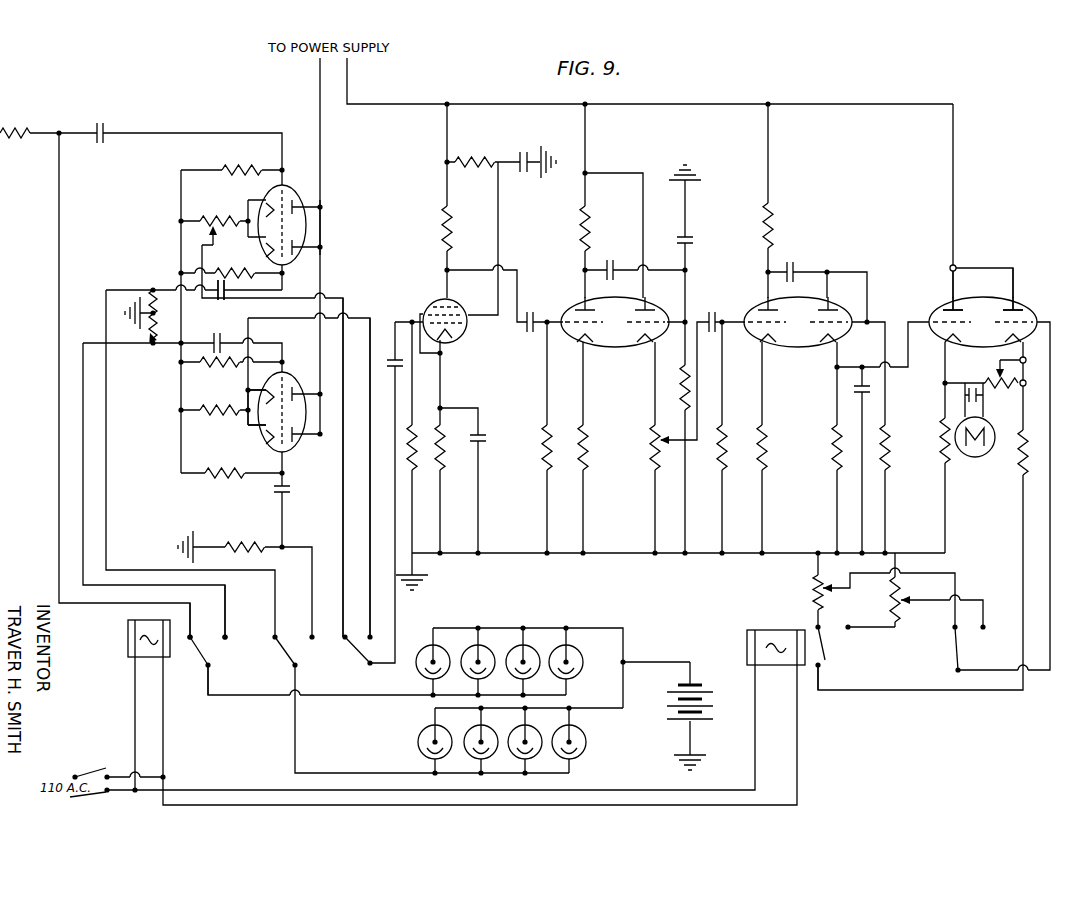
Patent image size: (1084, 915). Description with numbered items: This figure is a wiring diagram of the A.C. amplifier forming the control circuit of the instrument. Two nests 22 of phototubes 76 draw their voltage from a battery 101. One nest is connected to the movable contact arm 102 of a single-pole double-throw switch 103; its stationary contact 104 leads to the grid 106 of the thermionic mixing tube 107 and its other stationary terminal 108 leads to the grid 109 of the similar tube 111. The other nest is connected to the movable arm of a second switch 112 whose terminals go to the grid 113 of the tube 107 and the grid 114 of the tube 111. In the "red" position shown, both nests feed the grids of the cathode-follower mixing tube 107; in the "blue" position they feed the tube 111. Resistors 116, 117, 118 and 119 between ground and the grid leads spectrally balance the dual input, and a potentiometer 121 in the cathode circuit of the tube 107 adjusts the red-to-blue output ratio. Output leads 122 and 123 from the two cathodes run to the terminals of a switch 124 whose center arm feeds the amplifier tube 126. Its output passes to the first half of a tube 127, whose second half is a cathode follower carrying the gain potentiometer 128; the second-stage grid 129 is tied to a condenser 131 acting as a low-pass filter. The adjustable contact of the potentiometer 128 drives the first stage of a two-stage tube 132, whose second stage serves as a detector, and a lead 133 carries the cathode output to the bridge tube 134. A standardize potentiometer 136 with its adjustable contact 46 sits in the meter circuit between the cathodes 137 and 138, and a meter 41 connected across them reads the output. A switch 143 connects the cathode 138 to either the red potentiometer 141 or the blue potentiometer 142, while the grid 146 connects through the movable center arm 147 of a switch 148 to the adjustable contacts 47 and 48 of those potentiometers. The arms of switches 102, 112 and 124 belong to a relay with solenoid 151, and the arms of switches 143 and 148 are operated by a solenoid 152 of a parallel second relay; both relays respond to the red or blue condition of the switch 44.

The resistor 116 is at (22, 145).
The grid 106 is at (284, 193).
The thermionic mixing tube 107 is at (310, 225).
The potentiometer 121 is at (218, 236).
The resistor 117 is at (150, 296).
The resistor 118 is at (153, 347).
The grid 113 is at (287, 272).
The grid 109 is at (300, 351).
The tube 111 is at (262, 435).
The grid 114 is at (288, 452).
The resistor 119 is at (264, 542).
The output lead 122 is at (338, 298).
The output lead 123 is at (370, 320).
The stationary contact 104 is at (191, 635).
The stationary terminal 108 is at (226, 636).
The single-pole double-throw switch 112 is at (284, 646).
The single-pole double-throw switch 103 is at (193, 655).
The movable contact arm 102 is at (246, 670).
The single-pole double-throw switch 124 is at (350, 603).
The solenoid 151 is at (137, 618).
The switch 44 is at (94, 769).
The amplifier tube 126 is at (465, 341).
The tube 127 is at (574, 303).
The second stage grid 129 is at (645, 331).
The potentiometer 128 is at (652, 451).
The condenser 131 is at (689, 244).
The two-stage tube 132 is at (798, 348).
The lead 133 is at (906, 370).
The two-stage tube 134 is at (941, 306).
The cathode 137 is at (960, 333).
The grid 146 is at (1023, 316).
The cathode 138 is at (1037, 324).
The potentiometer wiper 46 is at (998, 366).
The standardize potentiometer 136 is at (1005, 389).
The meter 41 is at (978, 460).
The red potentiometer 141 is at (814, 582).
The adjustable contact 47 is at (838, 594).
The adjustable contact 48 is at (915, 603).
The blue potentiometer 142 is at (893, 622).
The single-pole double-throw switch 143 is at (827, 647).
The movable center arm 147 is at (953, 660).
The single-pole double-throw switch 148 is at (980, 642).
The solenoid 152 is at (760, 629).
The phototubes 76 is at (565, 647).
The nests of phototubes 22 is at (418, 726).
The battery 101 is at (675, 711).